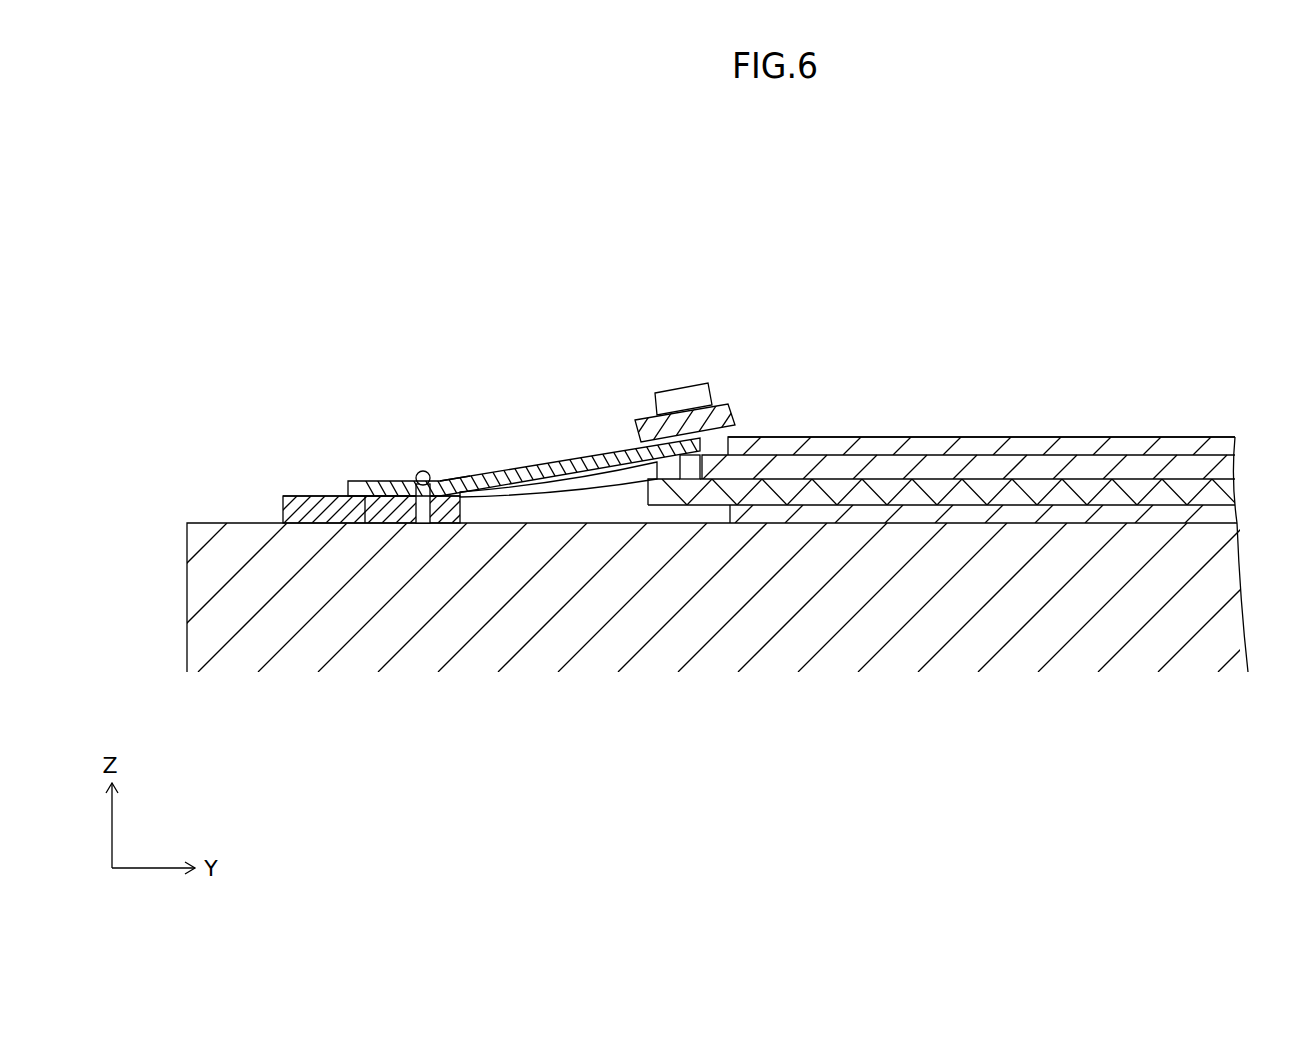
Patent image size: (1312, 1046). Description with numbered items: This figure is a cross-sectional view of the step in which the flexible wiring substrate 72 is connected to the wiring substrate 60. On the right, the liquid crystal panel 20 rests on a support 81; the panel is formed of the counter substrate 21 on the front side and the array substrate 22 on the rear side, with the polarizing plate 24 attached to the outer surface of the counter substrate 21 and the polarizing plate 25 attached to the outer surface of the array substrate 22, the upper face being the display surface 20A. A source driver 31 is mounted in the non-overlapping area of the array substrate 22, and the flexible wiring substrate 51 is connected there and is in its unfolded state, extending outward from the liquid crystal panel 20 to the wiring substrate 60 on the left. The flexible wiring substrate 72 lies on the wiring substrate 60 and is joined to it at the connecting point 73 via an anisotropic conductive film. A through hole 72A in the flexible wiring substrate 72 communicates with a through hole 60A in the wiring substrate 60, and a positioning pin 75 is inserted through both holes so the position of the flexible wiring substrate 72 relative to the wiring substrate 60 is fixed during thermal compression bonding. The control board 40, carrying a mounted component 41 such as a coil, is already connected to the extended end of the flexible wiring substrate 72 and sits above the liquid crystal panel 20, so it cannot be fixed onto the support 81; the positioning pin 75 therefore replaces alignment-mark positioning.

The liquid crystal panel 20 is at (975, 551).
The display surface 20A is at (1107, 437).
The counter substrate 21 is at (935, 468).
The array substrate 22 is at (1027, 497).
The polarizing plate 24 is at (1188, 450).
The polarizing plate 25 is at (1180, 507).
The source driver 31 is at (690, 456).
The control board 40 is at (700, 372).
The mounted component 41 is at (682, 400).
The flexible wiring substrate 51 is at (577, 483).
The wiring substrate 60 is at (386, 584).
The through hole 60A is at (425, 497).
The flexible wiring substrate 72 is at (536, 424).
The through hole 72A is at (458, 481).
The connecting point 73 is at (366, 503).
The positioning pin 75 is at (424, 471).
The support 81 is at (998, 633).